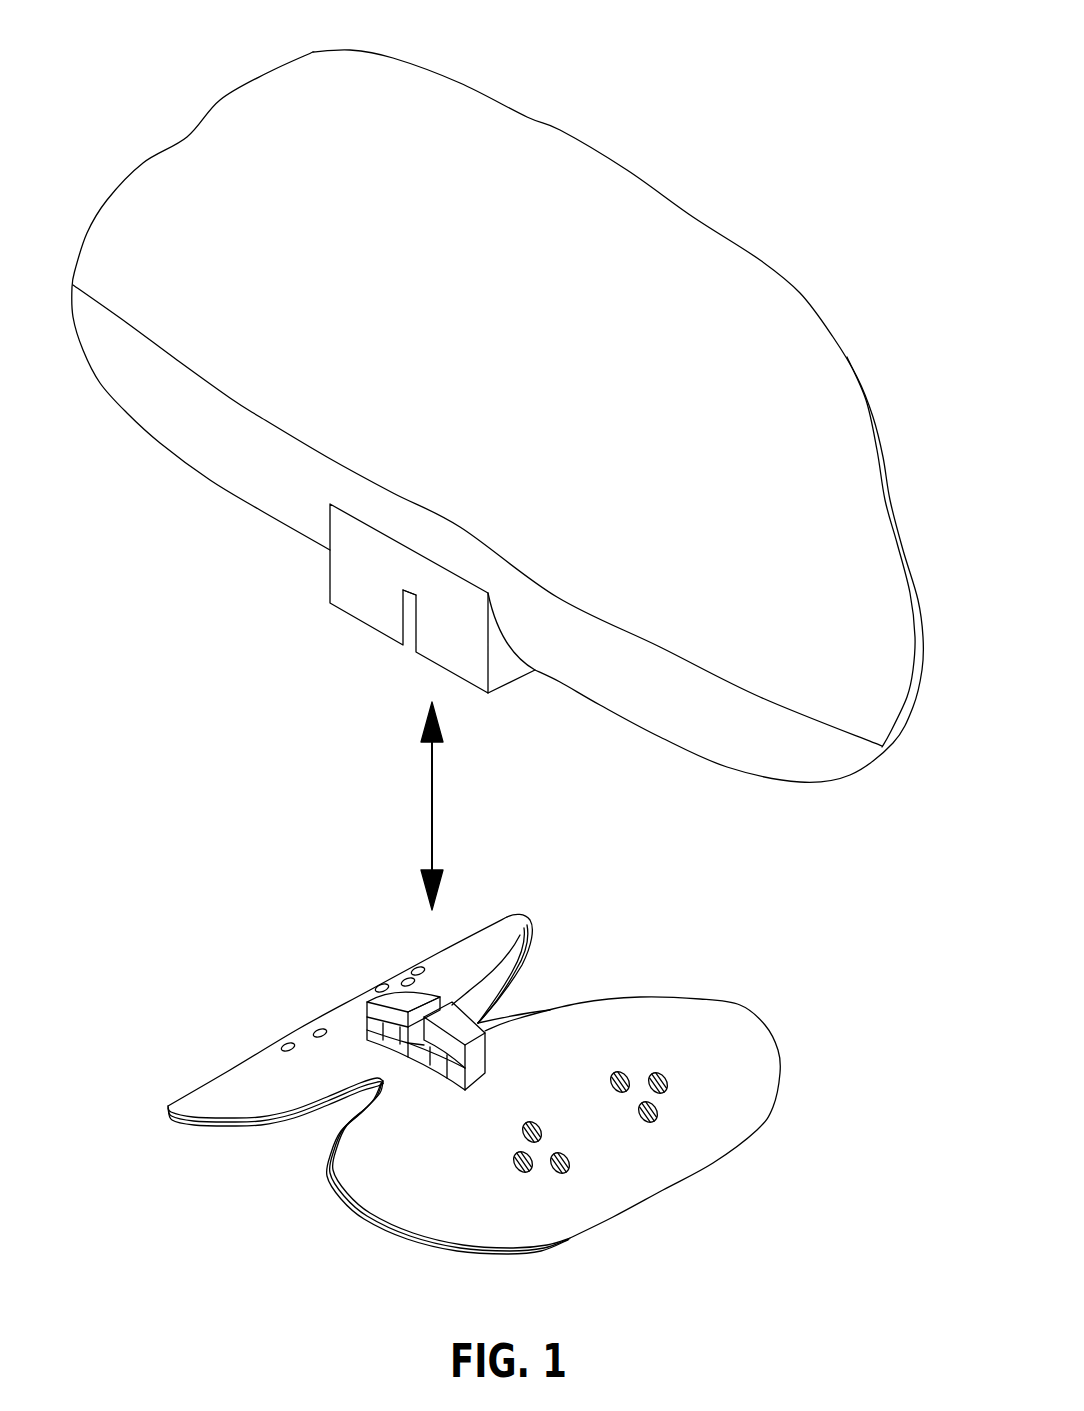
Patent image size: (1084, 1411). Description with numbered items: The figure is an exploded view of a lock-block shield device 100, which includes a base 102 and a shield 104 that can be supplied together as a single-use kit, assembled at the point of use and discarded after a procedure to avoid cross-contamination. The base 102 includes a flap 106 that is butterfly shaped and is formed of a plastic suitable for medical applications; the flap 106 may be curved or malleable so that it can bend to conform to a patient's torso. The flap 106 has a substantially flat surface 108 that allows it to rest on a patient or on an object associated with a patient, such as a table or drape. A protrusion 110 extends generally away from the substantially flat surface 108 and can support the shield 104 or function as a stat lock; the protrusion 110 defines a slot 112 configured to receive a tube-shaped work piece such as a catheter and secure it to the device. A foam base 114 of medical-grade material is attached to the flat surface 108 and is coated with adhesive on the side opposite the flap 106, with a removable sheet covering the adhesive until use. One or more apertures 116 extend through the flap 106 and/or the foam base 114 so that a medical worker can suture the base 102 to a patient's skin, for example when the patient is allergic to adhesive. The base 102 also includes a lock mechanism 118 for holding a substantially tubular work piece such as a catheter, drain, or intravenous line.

The lock-block shield device 100 is at (845, 184).
The base 102 is at (705, 876).
The shield 104 is at (297, 37).
The flap 106 is at (672, 1010).
The substantially flat surface 108 is at (207, 1125).
The protrusion 110 is at (452, 977).
The slot 112 is at (488, 984).
The foam base 114 is at (490, 1257).
The apertures 116 is at (520, 1172).
The lock mechanism 118 is at (347, 1012).